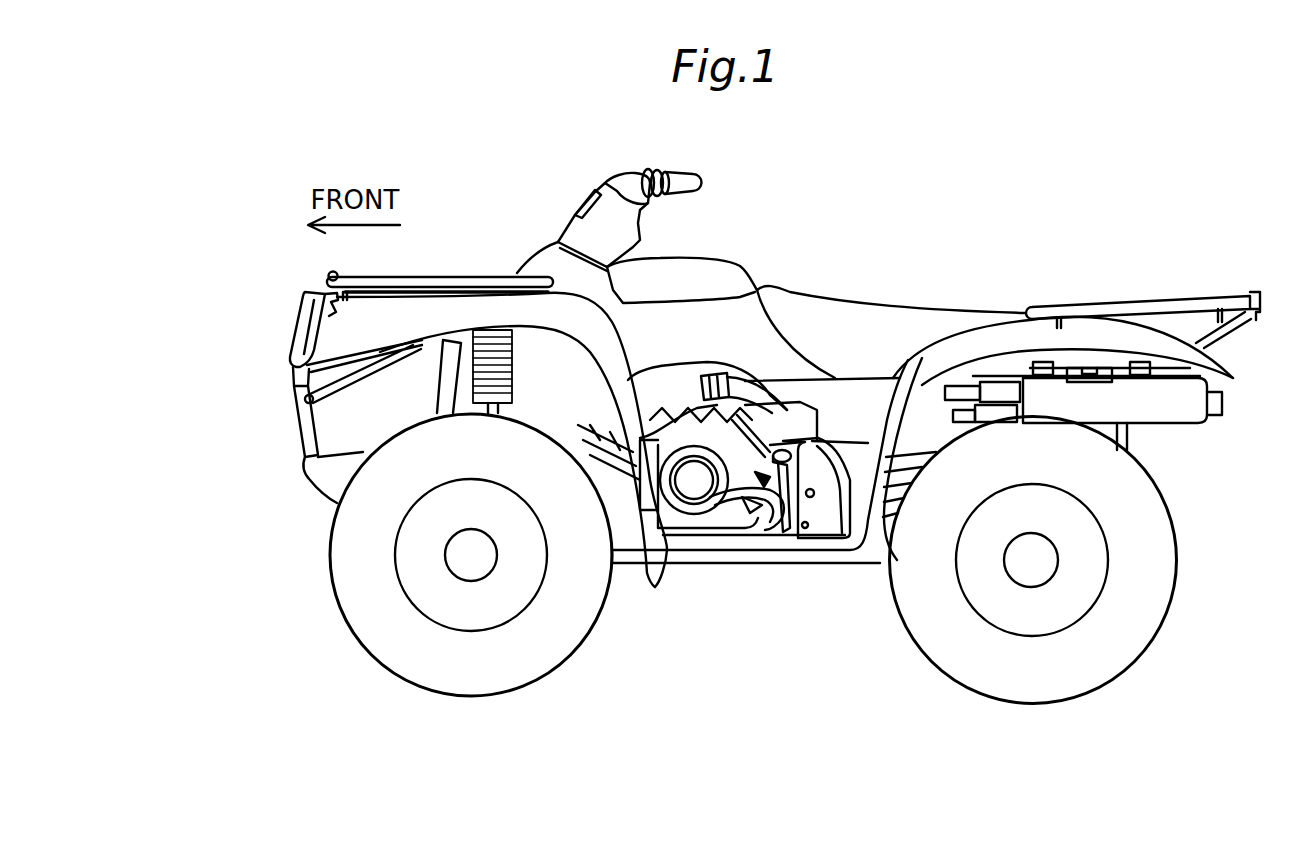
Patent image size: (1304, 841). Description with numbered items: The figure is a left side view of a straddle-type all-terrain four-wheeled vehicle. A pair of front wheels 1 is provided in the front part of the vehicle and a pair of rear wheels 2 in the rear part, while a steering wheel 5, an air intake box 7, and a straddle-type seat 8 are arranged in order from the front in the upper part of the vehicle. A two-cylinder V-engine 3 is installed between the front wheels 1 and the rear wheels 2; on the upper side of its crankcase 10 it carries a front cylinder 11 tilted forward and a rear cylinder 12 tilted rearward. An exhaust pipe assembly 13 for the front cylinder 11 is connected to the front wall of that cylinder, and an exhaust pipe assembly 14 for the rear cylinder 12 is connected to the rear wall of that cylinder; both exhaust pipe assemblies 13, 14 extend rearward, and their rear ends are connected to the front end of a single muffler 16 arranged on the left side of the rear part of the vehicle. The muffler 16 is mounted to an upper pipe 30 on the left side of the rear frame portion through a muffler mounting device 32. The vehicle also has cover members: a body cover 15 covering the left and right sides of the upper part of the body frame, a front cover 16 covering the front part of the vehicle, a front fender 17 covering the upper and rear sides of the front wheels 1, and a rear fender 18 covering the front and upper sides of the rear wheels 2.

The front wheels 1 is at (363, 638).
The rear wheels 2 is at (1147, 627).
The two-cylinder V-engine 3 is at (762, 510).
The steering wheel 5 is at (569, 174).
The air intake box 7 is at (707, 262).
The straddle-type seat 8 is at (833, 335).
The crankcase 10 is at (727, 505).
The front cylinder 11 is at (650, 420).
The rear cylinder 12 is at (758, 475).
The exhaust pipe assembly for front cylinder 13 is at (687, 377).
The exhaust pipe assembly for rear cylinder 14 is at (862, 522).
The body cover 15 is at (743, 331).
The muffler 16 is at (382, 388).
The front fender 17 is at (457, 298).
The rear fender 18 is at (1107, 332).
The upper pipe 30 is at (1012, 370).
The muffler mounting device 32 is at (1089, 344).